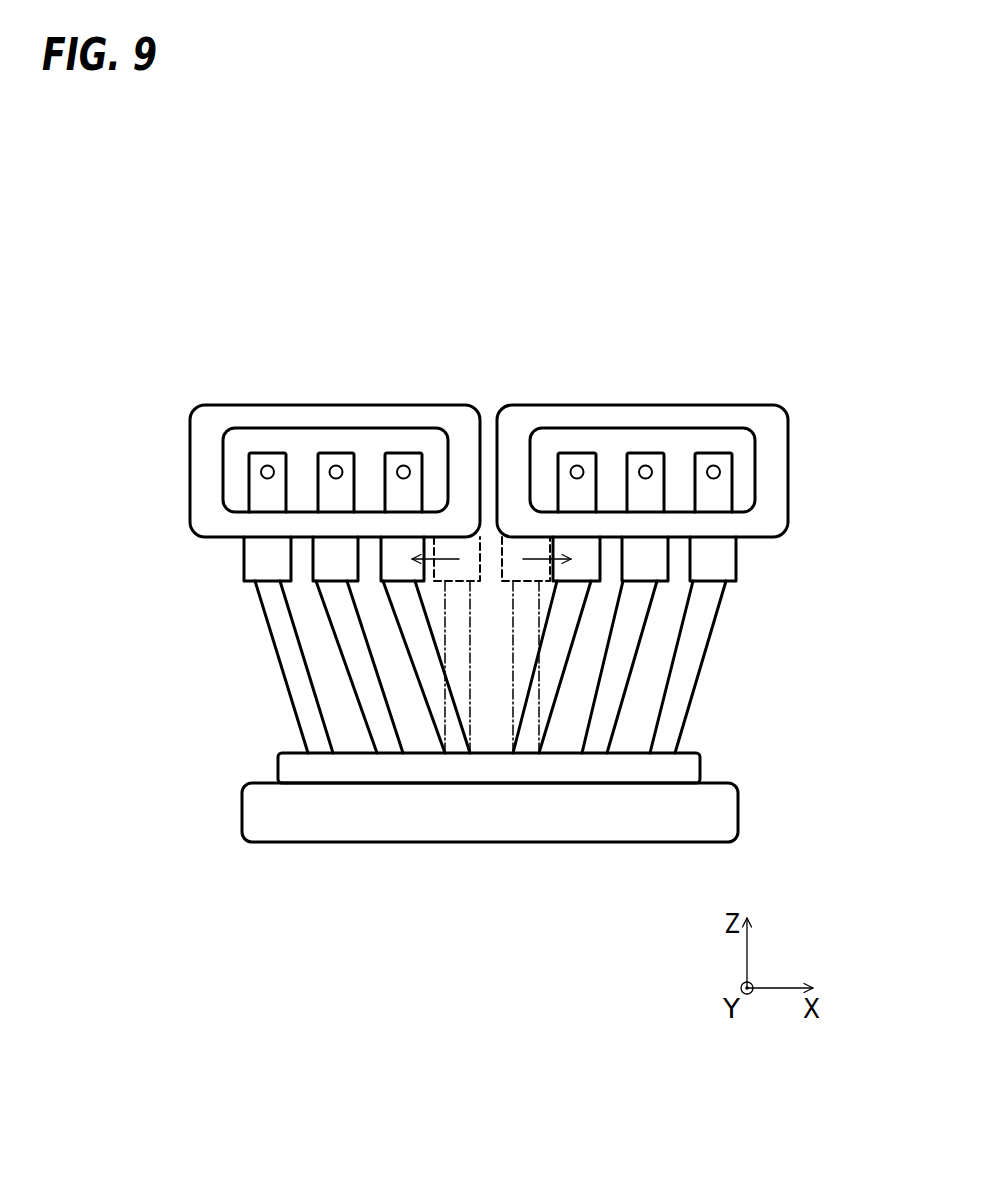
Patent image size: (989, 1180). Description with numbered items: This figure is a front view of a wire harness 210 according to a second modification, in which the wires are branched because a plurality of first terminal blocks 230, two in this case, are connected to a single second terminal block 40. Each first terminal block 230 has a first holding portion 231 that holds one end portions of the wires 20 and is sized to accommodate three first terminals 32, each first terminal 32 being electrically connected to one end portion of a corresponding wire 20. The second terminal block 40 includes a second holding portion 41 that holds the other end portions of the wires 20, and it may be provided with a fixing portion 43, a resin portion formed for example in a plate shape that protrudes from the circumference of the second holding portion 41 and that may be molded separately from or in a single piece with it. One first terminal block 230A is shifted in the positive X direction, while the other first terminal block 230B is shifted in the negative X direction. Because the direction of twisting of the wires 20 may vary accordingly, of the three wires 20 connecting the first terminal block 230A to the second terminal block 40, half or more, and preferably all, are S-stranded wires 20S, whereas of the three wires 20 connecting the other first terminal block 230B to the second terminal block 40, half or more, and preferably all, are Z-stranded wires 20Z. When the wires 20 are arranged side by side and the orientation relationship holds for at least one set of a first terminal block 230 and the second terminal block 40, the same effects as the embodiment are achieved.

The wire harness 210 is at (250, 268).
The first terminal block 230 is at (488, 454).
The first terminal block 230A is at (626, 400).
The first terminal block 230B is at (408, 400).
The first holding portion 231 is at (200, 478).
The first terminal 32 is at (268, 463).
The wire 20 is at (490, 709).
The Z-stranded wire 20Z is at (318, 742).
The S-stranded wire 20S is at (512, 700).
The second terminal block 40 is at (747, 803).
The second holding portion 41 is at (687, 769).
The fixing portion 43 is at (710, 832).